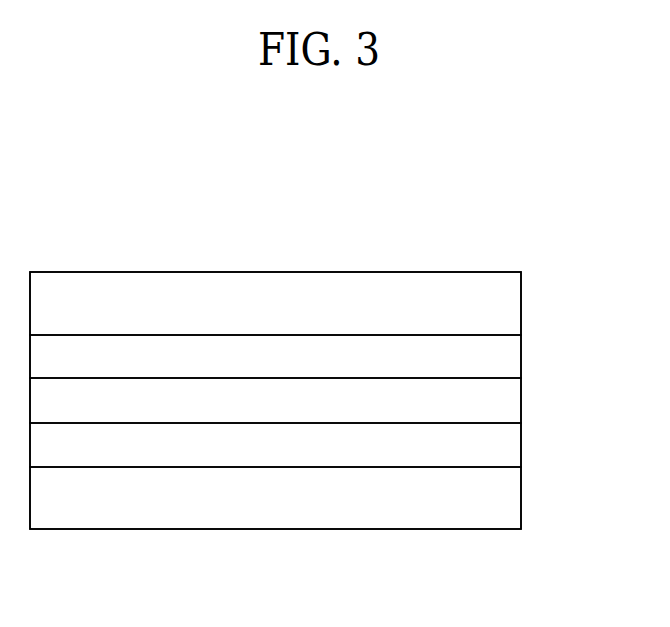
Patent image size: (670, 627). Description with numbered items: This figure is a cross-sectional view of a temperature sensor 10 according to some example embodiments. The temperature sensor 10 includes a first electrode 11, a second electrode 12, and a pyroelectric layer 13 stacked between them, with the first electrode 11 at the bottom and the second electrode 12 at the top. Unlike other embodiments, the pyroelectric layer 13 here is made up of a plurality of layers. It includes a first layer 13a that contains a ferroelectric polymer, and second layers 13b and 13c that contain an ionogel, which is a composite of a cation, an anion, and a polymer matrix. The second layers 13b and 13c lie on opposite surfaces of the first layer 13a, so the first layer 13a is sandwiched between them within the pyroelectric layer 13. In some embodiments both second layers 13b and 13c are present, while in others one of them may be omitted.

The temperature sensor 10 is at (328, 343).
The first electrode 11 is at (508, 494).
The second electrode 12 is at (508, 302).
The pyroelectric layer 13 is at (595, 357).
The first layer 13a is at (508, 397).
The second layer 13b is at (508, 437).
The second layer 13c is at (508, 357).